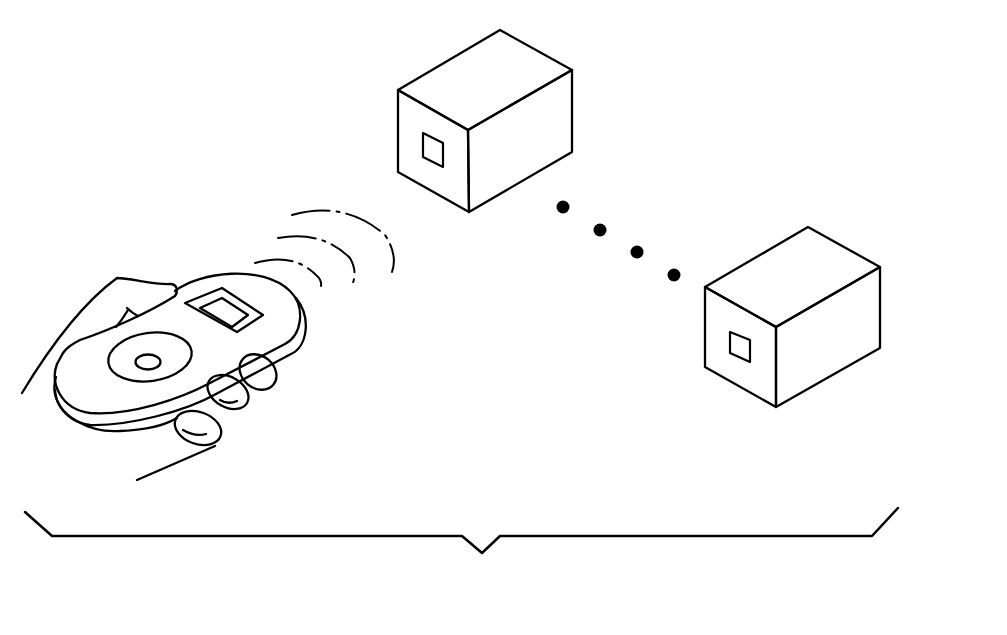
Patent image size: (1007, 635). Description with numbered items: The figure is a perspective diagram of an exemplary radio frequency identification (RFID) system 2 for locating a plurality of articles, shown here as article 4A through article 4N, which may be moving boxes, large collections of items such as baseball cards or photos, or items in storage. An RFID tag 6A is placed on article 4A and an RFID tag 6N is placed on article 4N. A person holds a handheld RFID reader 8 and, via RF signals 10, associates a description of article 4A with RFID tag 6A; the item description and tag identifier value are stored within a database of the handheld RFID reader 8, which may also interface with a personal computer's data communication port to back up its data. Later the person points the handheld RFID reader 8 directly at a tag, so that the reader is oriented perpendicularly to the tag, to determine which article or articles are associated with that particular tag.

The radio frequency identification (RFID) system 2 is at (266, 47).
The article 4A is at (470, 71).
The article 4N is at (775, 257).
The RFID tag 6A is at (424, 151).
The RFID tag 6N is at (740, 350).
The handheld RFID reader 8 is at (198, 280).
The RF signals 10 is at (319, 299).